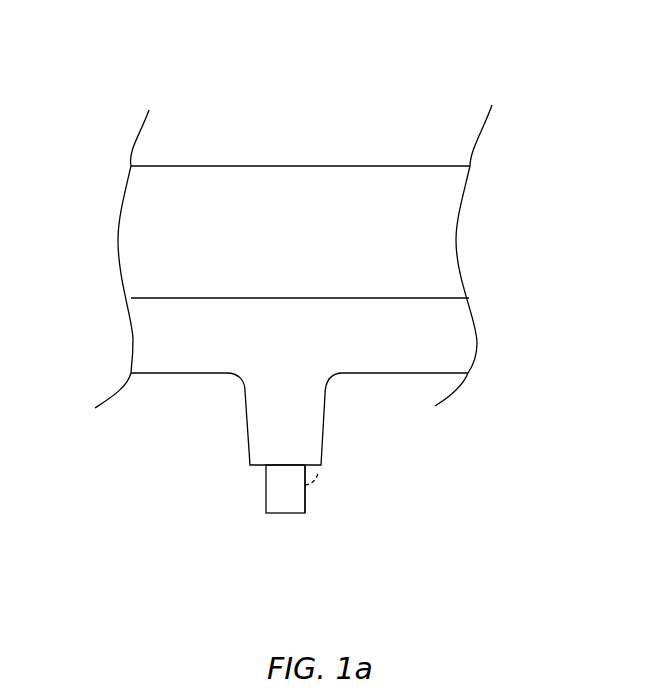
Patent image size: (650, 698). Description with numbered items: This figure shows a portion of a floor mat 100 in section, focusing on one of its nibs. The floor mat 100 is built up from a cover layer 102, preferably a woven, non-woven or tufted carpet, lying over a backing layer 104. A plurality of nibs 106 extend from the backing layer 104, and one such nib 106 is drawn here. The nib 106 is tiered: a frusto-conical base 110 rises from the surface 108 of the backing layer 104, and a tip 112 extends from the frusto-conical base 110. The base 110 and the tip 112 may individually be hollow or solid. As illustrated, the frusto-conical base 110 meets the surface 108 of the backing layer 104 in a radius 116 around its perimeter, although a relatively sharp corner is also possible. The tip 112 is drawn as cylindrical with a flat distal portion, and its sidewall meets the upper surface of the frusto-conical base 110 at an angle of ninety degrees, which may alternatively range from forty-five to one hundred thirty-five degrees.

The floor mat 100 is at (187, 110).
The cover layer 102 is at (356, 188).
The backing layer 104 is at (455, 337).
The nib 106 is at (263, 525).
The surface of the backing layer 108 is at (394, 375).
The frusto-conical base 110 is at (247, 448).
The tip 112 is at (300, 503).
The radius 116 is at (243, 375).